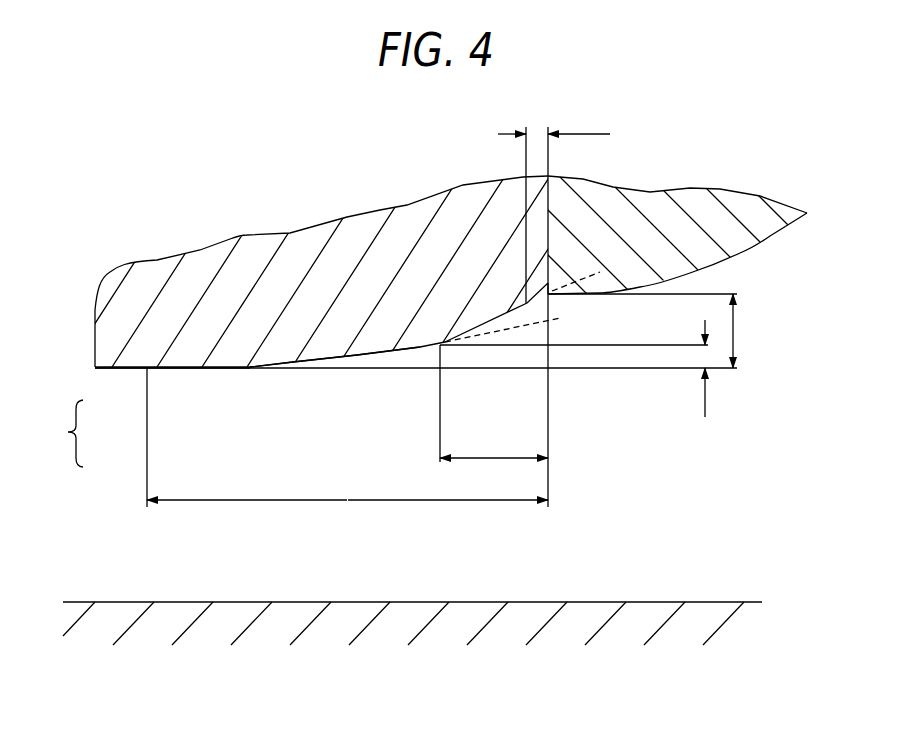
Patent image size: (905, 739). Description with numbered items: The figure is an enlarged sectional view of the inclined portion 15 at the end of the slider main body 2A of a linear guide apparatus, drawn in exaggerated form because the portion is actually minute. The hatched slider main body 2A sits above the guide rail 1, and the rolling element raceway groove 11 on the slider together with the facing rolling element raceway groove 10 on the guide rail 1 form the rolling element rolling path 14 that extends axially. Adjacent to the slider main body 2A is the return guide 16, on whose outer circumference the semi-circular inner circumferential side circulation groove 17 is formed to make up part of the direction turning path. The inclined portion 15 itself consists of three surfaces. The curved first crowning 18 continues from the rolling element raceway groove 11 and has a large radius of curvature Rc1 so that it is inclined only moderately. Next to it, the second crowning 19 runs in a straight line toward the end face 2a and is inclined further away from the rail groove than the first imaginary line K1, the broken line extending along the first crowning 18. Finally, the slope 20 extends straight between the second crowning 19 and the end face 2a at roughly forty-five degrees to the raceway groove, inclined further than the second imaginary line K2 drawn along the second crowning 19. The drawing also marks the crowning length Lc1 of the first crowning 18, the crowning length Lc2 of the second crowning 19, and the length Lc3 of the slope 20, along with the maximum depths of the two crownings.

The guide rail 1 is at (301, 628).
The slider main body 2A is at (220, 287).
The end face of the slider main body 2a is at (550, 228).
The rolling element raceway groove 10 is at (157, 602).
The rolling element raceway groove 11 is at (128, 368).
The rolling element rolling path 14 is at (62, 433).
The inclined portion 15 is at (307, 388).
The return guide 16 is at (678, 210).
The inner circumferential side circulation groove 17 is at (740, 255).
The first crowning 18 is at (359, 357).
The second crowning 19 is at (503, 315).
The slope 20 is at (549, 289).
The first imaginary line K1 is at (480, 337).
The second imaginary line K2 is at (591, 276).
The radius of curvature Rc1 is at (327, 343).
The crowning length of the first crowning Lc1 is at (347, 437).
The crowning length of the second crowning Lc2 is at (494, 403).
The length of the slope Lc3 is at (554, 124).